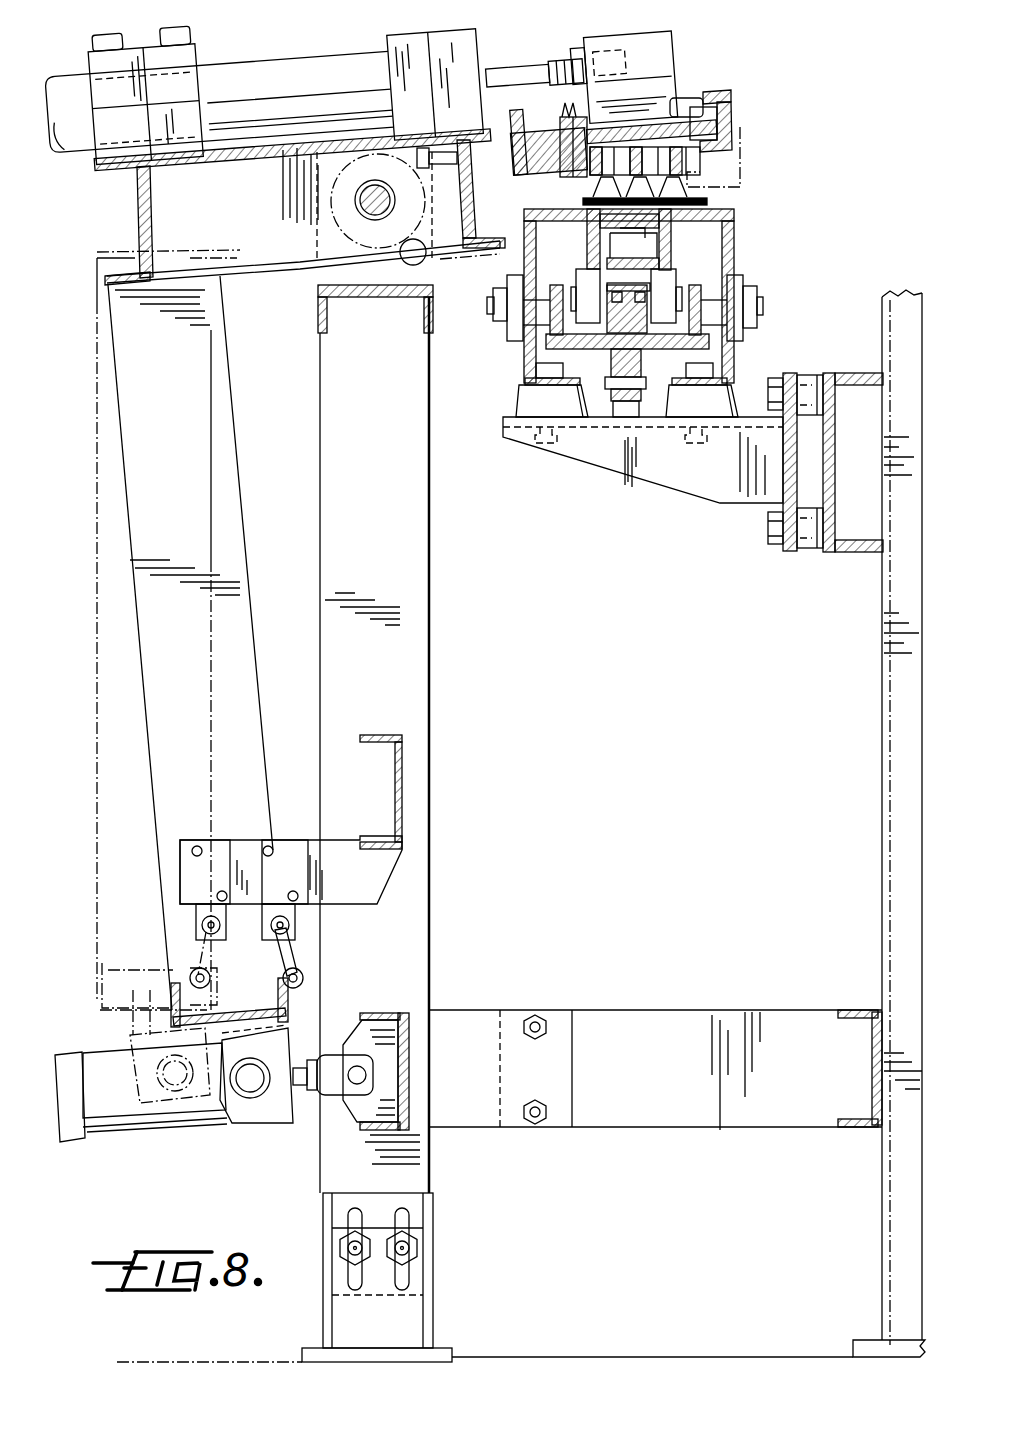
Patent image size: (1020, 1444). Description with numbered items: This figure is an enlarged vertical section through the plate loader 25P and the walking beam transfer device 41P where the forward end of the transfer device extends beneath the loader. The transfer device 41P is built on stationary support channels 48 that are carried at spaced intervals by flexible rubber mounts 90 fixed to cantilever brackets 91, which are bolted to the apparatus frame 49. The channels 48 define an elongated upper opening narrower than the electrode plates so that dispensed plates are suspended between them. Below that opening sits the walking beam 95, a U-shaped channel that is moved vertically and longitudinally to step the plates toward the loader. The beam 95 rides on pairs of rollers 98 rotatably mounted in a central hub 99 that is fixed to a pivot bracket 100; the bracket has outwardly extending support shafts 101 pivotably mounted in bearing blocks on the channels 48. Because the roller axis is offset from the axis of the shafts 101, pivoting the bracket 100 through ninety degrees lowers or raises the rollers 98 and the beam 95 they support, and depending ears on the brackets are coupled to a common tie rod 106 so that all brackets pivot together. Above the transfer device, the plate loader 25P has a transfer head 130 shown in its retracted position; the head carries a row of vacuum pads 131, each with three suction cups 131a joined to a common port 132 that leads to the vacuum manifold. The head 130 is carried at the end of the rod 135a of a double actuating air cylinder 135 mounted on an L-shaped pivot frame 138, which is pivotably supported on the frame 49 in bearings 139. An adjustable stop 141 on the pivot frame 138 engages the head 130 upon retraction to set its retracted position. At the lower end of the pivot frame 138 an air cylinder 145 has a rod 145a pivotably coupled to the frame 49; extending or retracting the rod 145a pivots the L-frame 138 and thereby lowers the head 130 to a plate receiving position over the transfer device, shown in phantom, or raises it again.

The plate loader 25P is at (708, 50).
The walking beam transfer device 41P is at (768, 253).
The stationary support channels 48 is at (522, 256).
The apparatus frame 49 is at (415, 648).
The flexible rubber mounts 90 is at (520, 394).
The cantilever brackets 91 is at (650, 487).
The walking beam 95 is at (673, 240).
The rollers 98 is at (593, 280).
The central hub 99 is at (646, 350).
The pivot bracket 100 is at (547, 345).
The support shafts 101 is at (492, 323).
The tie rod 106 is at (629, 395).
The transfer head 130 is at (722, 92).
The vacuum pads 131 is at (733, 116).
The suction cups 131a is at (587, 181).
The common port 132 is at (603, 142).
The double actuating air cylinder 135 is at (313, 63).
The cylinder rod 135a is at (552, 62).
The L-shaped pivot frame 138 is at (227, 433).
The bearings 139 is at (333, 263).
The adjustable stop 141 is at (505, 135).
The air cylinder 145 is at (118, 1135).
The cylinder rod 145a is at (303, 1110).